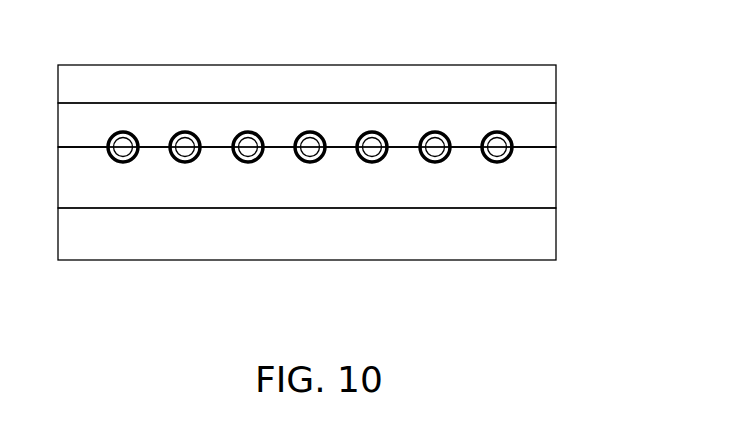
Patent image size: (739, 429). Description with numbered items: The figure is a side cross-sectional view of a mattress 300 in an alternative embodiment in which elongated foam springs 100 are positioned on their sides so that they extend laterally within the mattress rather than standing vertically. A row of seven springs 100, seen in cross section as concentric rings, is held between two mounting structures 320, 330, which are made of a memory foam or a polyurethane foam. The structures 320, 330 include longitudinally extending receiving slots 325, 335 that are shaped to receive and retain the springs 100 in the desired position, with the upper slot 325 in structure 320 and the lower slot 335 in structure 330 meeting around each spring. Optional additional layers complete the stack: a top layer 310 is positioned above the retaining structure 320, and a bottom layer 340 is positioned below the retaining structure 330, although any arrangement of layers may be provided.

The mattress 300 is at (338, 209).
The top layer 310 is at (545, 90).
The mounting structure 320 is at (546, 130).
The mounting structure 330 is at (556, 190).
The bottom layer 340 is at (560, 245).
The receiving slot 325 is at (185, 131).
The receiving slot 335 is at (252, 164).
The foam spring 100 is at (306, 165).